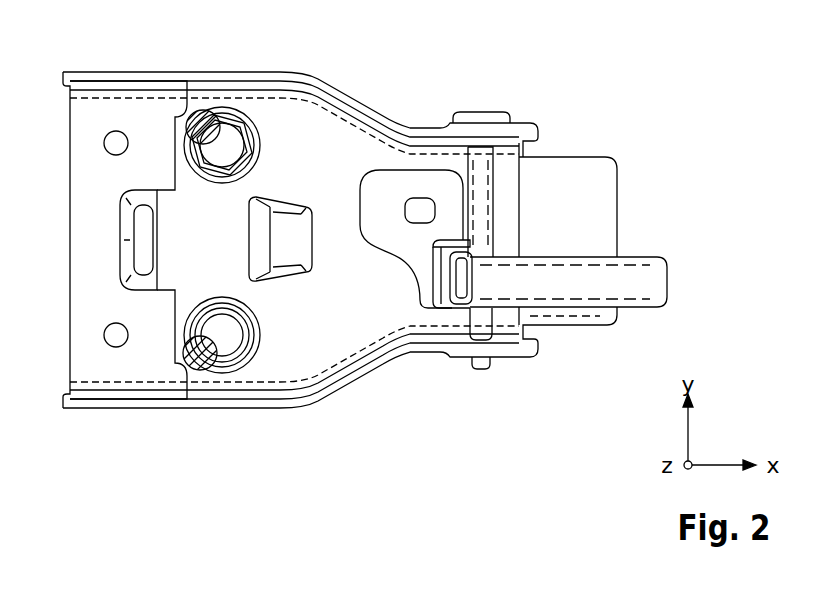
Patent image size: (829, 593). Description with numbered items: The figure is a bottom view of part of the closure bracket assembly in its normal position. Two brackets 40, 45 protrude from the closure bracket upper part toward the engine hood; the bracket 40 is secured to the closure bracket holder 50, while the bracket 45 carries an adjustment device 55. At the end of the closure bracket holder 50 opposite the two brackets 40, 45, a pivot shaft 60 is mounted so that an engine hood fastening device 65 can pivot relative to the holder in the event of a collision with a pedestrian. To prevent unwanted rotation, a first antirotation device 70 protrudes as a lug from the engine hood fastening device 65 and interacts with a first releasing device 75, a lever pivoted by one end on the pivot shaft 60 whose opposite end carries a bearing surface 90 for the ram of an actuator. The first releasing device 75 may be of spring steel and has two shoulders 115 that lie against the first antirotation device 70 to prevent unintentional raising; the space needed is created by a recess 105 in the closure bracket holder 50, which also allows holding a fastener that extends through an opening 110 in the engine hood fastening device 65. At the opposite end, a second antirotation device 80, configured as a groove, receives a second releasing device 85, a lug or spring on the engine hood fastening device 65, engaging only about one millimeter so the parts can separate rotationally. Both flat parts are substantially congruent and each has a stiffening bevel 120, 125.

The bracket 40 is at (201, 364).
The bracket 45 is at (201, 118).
The closure bracket holder 50 is at (88, 183).
The adjustment device 55 is at (240, 115).
The pivot shaft 60 is at (487, 200).
The engine hood fastening device 65 is at (607, 203).
The first antirotation device 70 is at (443, 280).
The first releasing device 75 is at (597, 312).
The second antirotation device 80 is at (143, 222).
The second releasing device 85 is at (168, 248).
The bearing surface 90 is at (660, 283).
The recess 105 is at (395, 190).
The opening 110 is at (416, 208).
The shoulder 115 is at (462, 242).
The bevel 120 is at (320, 114).
The bevel 125 is at (272, 72).